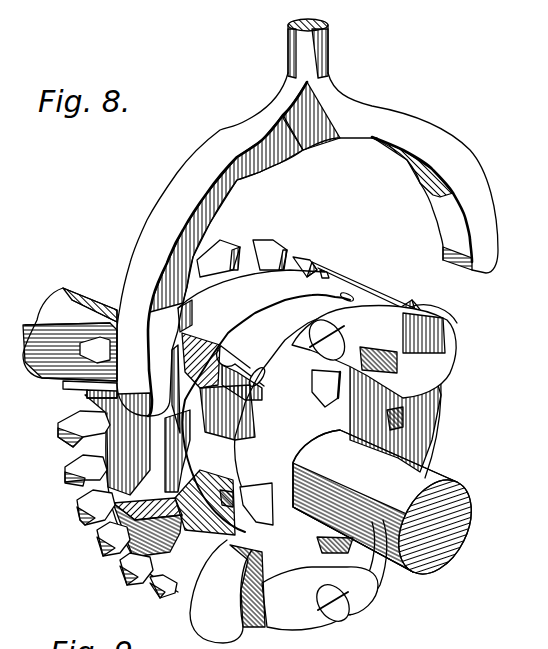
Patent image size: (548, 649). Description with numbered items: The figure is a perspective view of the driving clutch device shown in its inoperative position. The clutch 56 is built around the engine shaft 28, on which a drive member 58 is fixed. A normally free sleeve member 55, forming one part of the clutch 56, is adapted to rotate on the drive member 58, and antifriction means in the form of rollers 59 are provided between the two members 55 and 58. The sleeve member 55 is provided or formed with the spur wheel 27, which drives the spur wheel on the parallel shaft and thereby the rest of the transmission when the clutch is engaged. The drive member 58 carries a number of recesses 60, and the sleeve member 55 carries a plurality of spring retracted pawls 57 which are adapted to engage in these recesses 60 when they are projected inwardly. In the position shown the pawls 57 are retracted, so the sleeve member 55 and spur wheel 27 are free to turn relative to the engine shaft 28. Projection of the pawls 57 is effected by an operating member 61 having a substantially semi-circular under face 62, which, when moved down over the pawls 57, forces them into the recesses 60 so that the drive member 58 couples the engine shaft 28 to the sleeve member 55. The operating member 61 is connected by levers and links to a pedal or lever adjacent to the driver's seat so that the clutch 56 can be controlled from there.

The spur wheel 27 is at (288, 258).
The engine shaft 28 is at (77, 288).
The sleeve member 55 is at (260, 381).
The clutch 56 is at (430, 445).
The pawls 57 is at (323, 474).
The drive member 58 is at (284, 455).
The rollers 59 is at (206, 447).
The recesses 60 is at (327, 398).
The operating member 61 is at (331, 53).
The semi-circular under face 62 is at (434, 199).